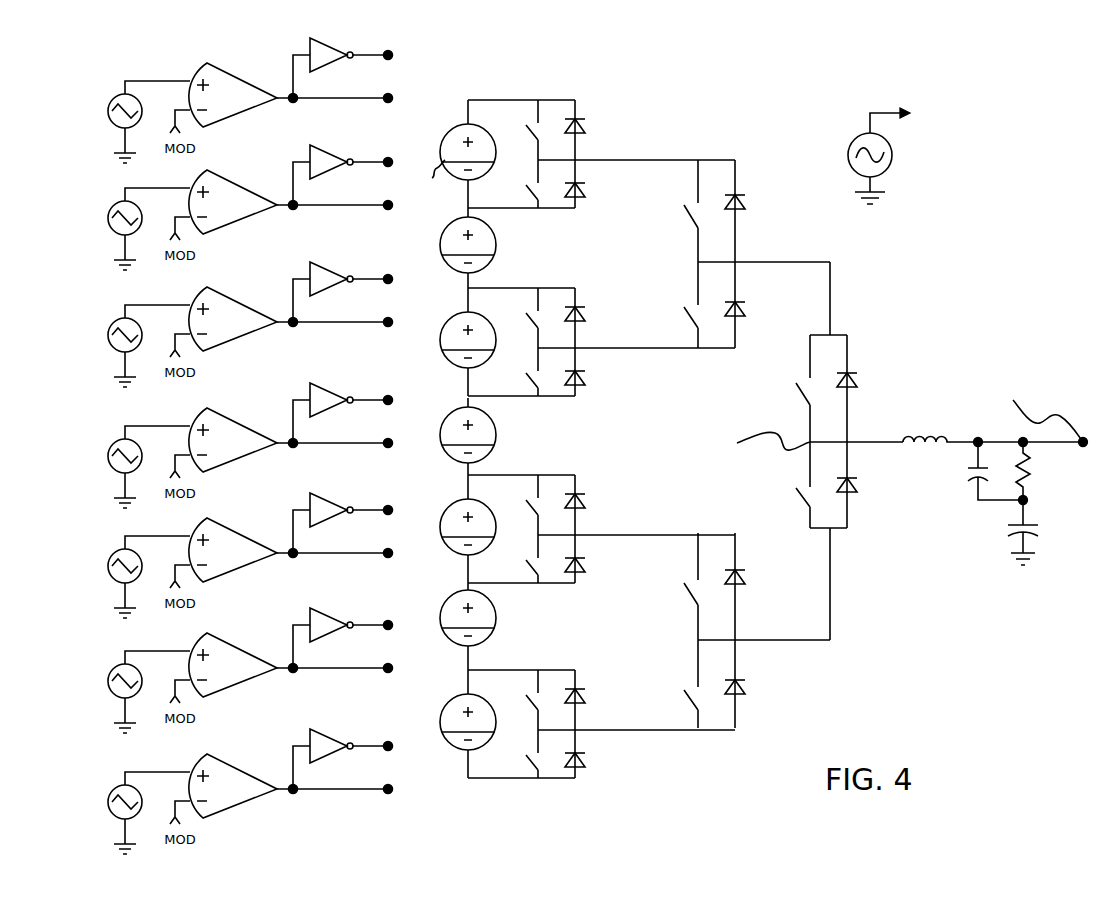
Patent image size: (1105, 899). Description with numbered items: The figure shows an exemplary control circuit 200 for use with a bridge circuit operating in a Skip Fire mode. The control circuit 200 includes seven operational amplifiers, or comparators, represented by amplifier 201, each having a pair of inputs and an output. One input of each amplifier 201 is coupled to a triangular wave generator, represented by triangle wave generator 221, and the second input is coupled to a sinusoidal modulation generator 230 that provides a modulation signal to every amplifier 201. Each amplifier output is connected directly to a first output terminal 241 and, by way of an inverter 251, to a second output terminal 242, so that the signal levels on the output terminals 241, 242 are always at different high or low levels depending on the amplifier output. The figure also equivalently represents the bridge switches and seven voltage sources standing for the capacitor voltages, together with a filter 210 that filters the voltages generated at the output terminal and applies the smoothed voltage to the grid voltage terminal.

The control circuit 200 is at (913, 308).
The amplifier 201 is at (246, 106).
The filter 210 is at (947, 502).
The triangle wave generator 221 is at (109, 100).
The sinusoidal modulation generator 230 is at (891, 157).
The output terminal 241 is at (390, 102).
The output terminal 242 is at (390, 57).
The inverter 251 is at (303, 35).